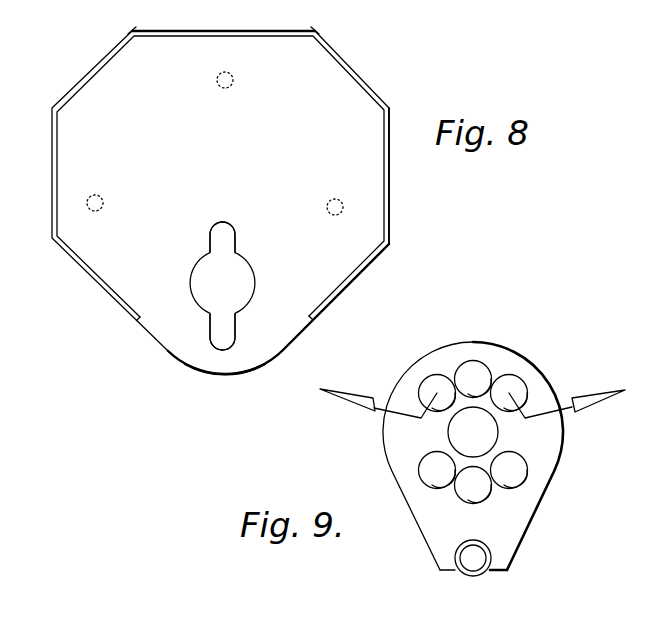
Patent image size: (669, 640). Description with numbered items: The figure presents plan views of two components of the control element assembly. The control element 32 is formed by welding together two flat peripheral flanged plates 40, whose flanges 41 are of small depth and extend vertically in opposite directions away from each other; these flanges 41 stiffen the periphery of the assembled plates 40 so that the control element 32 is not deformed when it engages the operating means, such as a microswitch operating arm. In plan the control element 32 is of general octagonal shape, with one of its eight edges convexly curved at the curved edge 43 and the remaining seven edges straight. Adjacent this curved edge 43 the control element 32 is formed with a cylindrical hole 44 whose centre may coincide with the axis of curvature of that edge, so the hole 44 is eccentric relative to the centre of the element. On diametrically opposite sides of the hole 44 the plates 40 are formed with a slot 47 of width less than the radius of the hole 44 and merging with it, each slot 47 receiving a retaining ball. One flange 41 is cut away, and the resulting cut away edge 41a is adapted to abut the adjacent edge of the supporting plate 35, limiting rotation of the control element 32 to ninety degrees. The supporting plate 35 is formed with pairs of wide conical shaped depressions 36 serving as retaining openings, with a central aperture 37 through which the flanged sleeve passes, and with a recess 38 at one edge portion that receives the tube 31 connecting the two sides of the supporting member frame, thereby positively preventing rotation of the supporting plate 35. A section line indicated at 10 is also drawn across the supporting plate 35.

In FIG. 9, the section line 10 is at (472, 392).
In FIG. 9, the tube 31 is at (468, 575).
In FIG. 8, the control element 32 is at (215, 143).
In FIG. 9, the supporting plate 35 is at (520, 518).
In FIG. 9, the conical shaped depressions 36 is at (517, 383).
In FIG. 9, the aperture 37 is at (460, 428).
In FIG. 9, the recess 38 is at (463, 545).
In FIG. 8, the flanged plate 40 is at (135, 278).
In FIG. 8, the flange 41 is at (58, 167).
In FIG. 8, the cut away edge 41a is at (135, 33).
In FIG. 8, the curved edge 43 is at (212, 372).
In FIG. 8, the hole 44 is at (245, 277).
In FIG. 8, the slot 47 is at (232, 225).